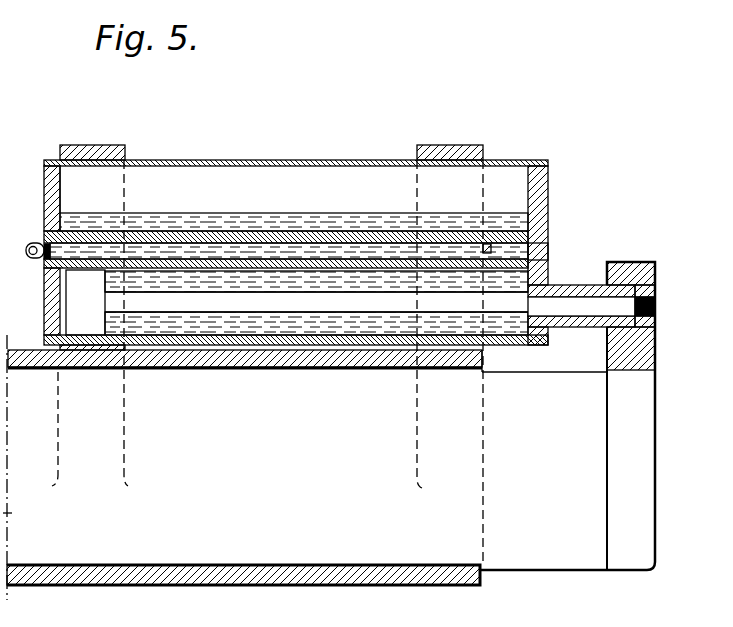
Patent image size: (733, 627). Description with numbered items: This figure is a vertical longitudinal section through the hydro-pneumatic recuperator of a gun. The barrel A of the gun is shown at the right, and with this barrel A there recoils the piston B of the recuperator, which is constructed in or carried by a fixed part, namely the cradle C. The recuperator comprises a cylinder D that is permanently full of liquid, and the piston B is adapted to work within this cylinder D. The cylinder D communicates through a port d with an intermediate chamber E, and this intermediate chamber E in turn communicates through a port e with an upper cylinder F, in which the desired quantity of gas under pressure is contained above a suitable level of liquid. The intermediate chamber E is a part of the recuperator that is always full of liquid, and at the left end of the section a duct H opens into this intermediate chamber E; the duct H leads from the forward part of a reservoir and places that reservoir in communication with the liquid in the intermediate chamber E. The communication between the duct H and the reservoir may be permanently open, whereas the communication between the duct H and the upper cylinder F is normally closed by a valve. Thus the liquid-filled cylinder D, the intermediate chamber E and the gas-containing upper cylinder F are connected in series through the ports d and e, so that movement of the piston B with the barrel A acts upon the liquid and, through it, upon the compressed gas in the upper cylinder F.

The barrel A is at (637, 535).
The piston B is at (88, 322).
The cradle C is at (32, 356).
The cylinder D is at (513, 328).
The intermediate chamber E is at (44, 270).
The upper cylinder F is at (338, 172).
The duct H is at (32, 243).
The port d is at (548, 267).
The port e is at (489, 247).